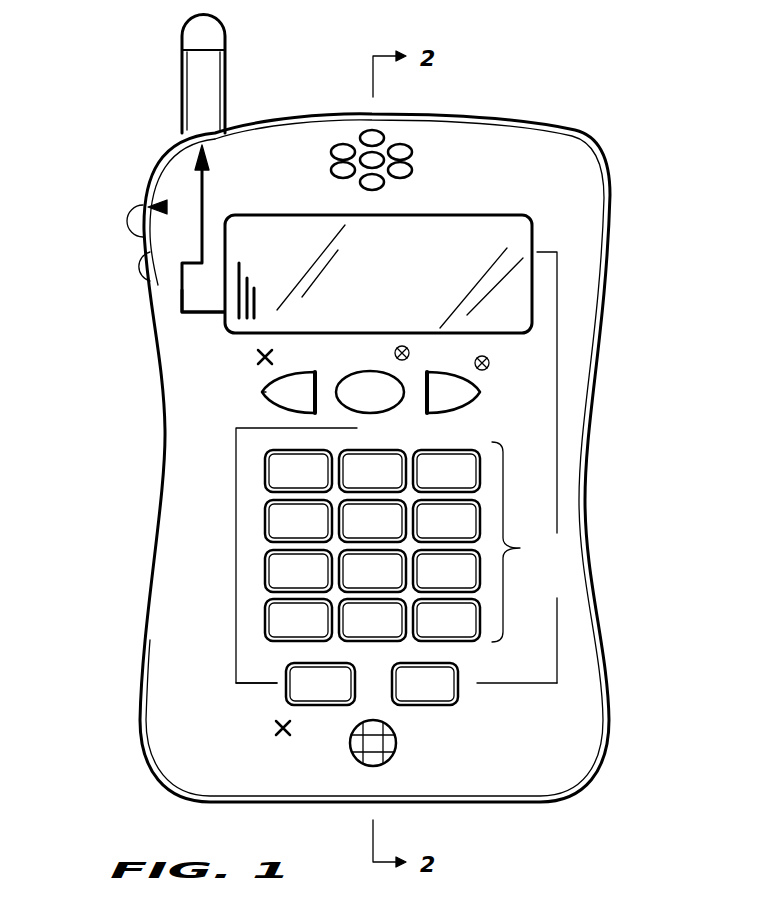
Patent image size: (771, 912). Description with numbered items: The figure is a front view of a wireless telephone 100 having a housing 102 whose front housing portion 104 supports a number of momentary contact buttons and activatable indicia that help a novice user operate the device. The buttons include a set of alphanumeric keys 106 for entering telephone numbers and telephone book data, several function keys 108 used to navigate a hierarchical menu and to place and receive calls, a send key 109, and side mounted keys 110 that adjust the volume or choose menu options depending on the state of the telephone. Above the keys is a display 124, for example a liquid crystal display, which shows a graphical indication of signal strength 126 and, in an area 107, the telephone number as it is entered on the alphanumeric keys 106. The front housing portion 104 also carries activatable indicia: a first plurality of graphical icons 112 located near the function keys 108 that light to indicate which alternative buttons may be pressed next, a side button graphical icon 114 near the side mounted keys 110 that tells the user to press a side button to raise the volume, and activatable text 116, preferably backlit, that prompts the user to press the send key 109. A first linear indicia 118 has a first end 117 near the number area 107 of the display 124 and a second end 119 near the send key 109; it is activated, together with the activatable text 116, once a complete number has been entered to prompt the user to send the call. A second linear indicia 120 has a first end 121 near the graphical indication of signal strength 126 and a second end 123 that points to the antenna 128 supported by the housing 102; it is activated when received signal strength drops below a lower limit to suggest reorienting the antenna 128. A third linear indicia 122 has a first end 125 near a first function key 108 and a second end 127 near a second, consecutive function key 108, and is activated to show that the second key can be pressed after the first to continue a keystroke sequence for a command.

The wireless telephone 100 is at (641, 112).
The housing 102 is at (587, 143).
The front housing portion 104 is at (577, 200).
The alphanumeric keys 106 is at (520, 549).
The area of the display 107 is at (447, 240).
The function keys 108 is at (320, 427).
The send key 109 is at (460, 690).
The side mounted keys 110 is at (130, 232).
The graphical icons 112 is at (258, 362).
The side button graphical icon 114 is at (152, 203).
The activatable text 116 is at (467, 735).
The first end of the first linear indicia 117 is at (545, 250).
The first linear indicia 118 is at (557, 598).
The second end of the first linear indicia 119 is at (477, 683).
The second linear indicia 120 is at (200, 193).
The first end of the second linear indicia 121 is at (222, 312).
The third linear indicia 122 is at (236, 546).
The second end of the second linear indicia 123 is at (200, 190).
The display 124 is at (300, 216).
The first end of the third linear indicia 125 is at (262, 397).
The graphical indication of signal strength 126 is at (238, 318).
The second end of the third linear indicia 127 is at (236, 684).
The antenna 128 is at (195, 28).